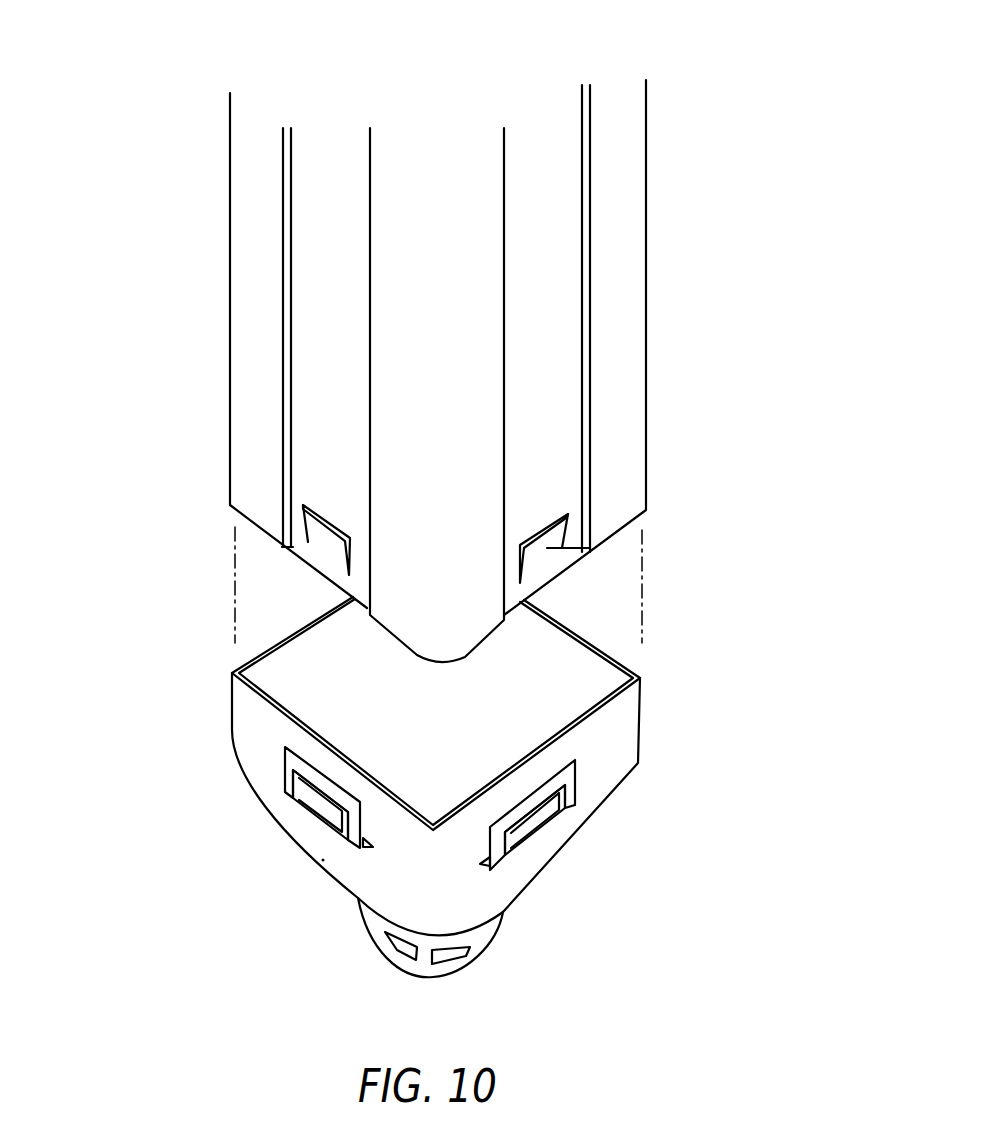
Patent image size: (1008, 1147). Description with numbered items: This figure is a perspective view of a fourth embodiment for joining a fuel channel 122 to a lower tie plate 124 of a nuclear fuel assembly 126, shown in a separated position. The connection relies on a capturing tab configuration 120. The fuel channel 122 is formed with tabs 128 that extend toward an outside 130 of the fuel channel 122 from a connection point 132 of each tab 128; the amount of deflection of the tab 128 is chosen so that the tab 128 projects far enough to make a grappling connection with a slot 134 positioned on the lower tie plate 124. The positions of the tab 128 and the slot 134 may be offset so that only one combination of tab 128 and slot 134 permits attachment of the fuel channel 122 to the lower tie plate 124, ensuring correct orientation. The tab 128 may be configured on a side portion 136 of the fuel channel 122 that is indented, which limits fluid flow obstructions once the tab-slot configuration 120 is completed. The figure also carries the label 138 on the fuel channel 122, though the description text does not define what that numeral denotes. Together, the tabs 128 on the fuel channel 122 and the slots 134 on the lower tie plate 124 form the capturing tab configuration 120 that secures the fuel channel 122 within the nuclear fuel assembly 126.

The capturing tab configuration 120 is at (455, 493).
The fuel channel 122 is at (255, 365).
The lower tie plate 124 is at (381, 787).
The nuclear fuel assembly 126 is at (416, 336).
The tabs 128 is at (287, 513).
The outside 130 is at (567, 447).
The connection point 132 is at (593, 553).
The slot 134 is at (548, 815).
The side portion 136 is at (542, 205).
The left channel 138 is at (335, 172).